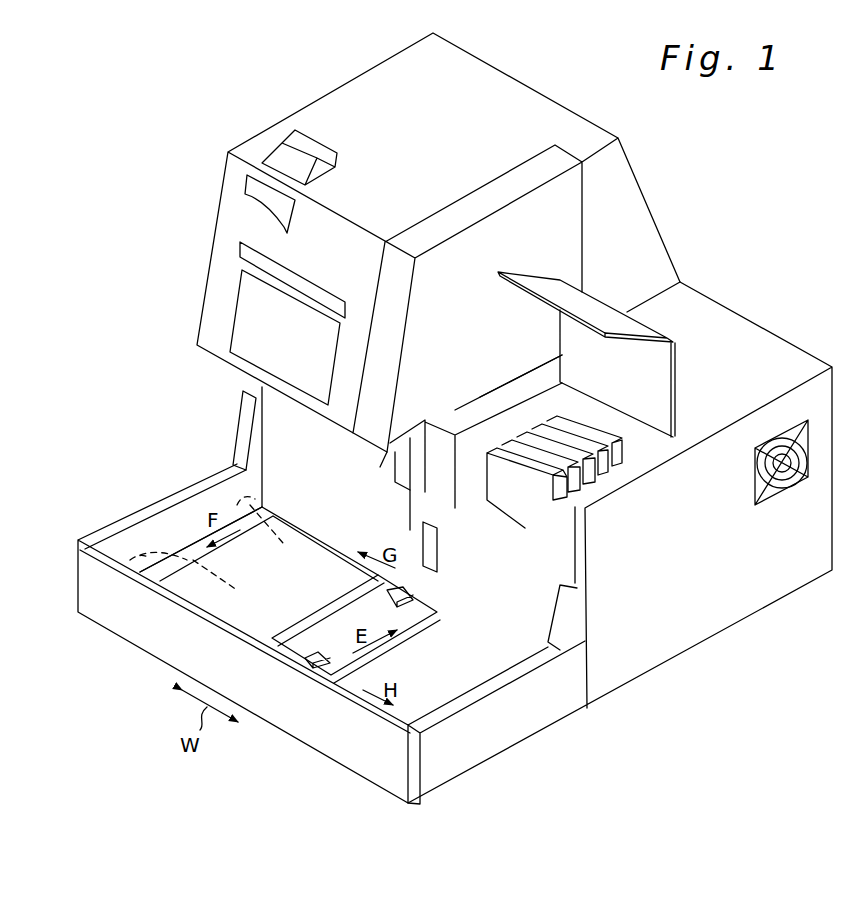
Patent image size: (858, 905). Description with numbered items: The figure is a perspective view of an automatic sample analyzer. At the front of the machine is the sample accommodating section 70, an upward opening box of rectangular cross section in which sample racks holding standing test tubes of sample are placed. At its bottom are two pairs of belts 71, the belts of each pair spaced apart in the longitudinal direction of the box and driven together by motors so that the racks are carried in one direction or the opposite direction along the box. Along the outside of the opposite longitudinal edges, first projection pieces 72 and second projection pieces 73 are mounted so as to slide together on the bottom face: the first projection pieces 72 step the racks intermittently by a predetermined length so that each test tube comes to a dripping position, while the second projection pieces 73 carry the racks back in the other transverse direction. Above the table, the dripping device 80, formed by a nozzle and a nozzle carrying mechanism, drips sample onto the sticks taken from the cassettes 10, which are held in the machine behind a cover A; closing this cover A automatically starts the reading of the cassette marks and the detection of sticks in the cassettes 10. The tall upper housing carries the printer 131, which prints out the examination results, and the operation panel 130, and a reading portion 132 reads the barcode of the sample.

The printer 131 is at (248, 98).
The operation panel 130 is at (275, 332).
The dripping device 80 is at (418, 508).
The cover A is at (590, 307).
The cassettes 10 is at (535, 517).
The reading portion 132 is at (430, 568).
The sample accommodating section 70 is at (267, 722).
The belts 71 is at (270, 637).
The first projection pieces 72 is at (365, 586).
The second projection pieces 73 is at (310, 652).